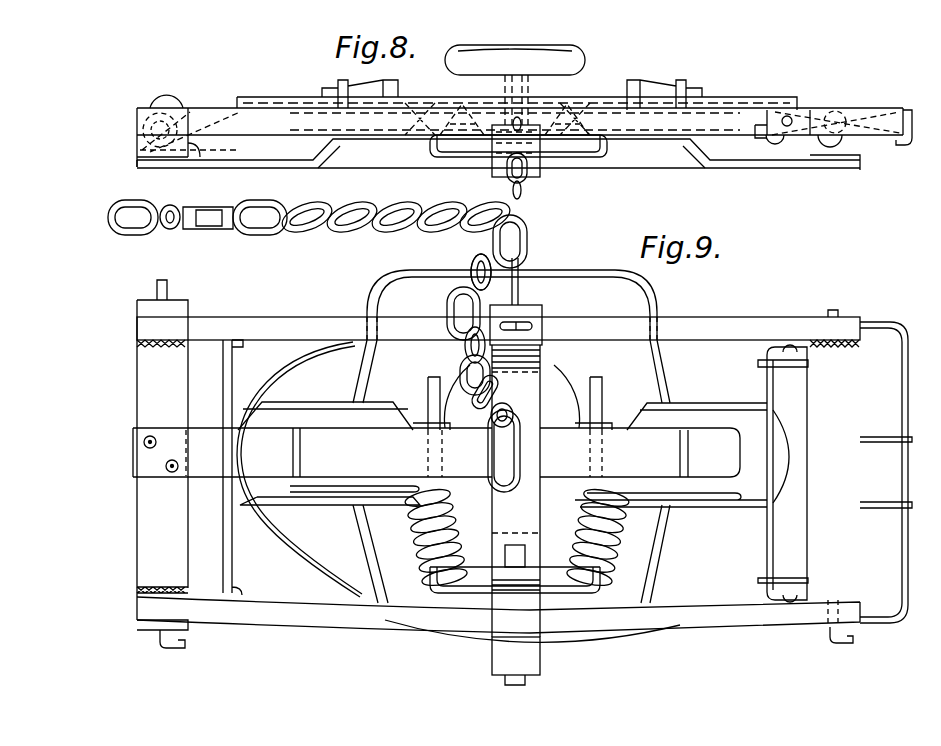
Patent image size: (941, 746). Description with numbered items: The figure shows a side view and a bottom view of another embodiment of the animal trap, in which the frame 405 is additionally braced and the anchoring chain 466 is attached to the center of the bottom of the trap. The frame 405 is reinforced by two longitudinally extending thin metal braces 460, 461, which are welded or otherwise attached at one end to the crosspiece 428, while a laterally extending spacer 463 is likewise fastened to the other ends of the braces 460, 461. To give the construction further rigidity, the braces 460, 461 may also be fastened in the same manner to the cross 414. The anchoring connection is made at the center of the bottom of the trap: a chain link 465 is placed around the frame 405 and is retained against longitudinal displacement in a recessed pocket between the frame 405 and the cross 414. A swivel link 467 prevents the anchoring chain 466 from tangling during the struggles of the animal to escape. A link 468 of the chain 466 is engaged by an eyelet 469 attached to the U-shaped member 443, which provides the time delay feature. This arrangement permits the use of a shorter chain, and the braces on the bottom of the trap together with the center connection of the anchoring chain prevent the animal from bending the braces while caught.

In FIG. 8, the frame 405 is at (374, 144).
In FIG. 9, the frame 405 is at (355, 463).
In FIG. 9, the cross 414 is at (500, 602).
In FIG. 8, the crosspiece 428 is at (158, 160).
In FIG. 9, the crosspiece 428 is at (143, 378).
In FIG. 9, the U-shaped member 443 is at (536, 321).
In FIG. 8, the brace 460 is at (668, 162).
In FIG. 9, the brace 460 is at (343, 618).
In FIG. 9, the brace 461 is at (284, 326).
In FIG. 8, the spacer 463 is at (860, 158).
In FIG. 9, the spacer 463 is at (838, 360).
In FIG. 9, the chain link 465 is at (490, 452).
In FIG. 9, the chain 466 is at (527, 236).
In FIG. 8, the swivel link 467 is at (519, 37).
In FIG. 9, the swivel link 467 is at (467, 393).
In FIG. 9, the link 468 is at (478, 261).
In FIG. 9, the eyelet 469 is at (519, 292).